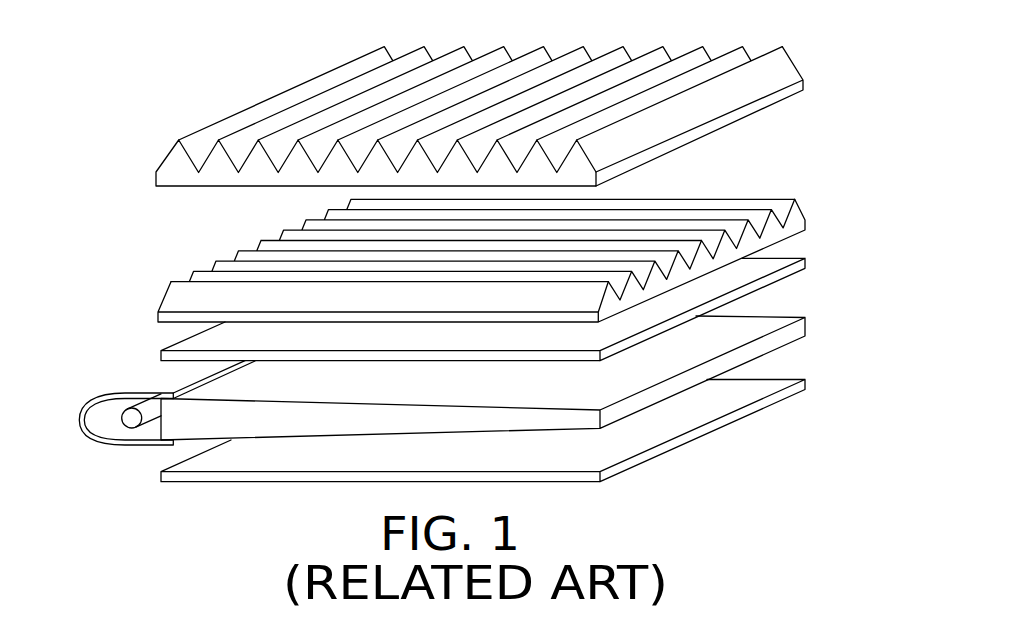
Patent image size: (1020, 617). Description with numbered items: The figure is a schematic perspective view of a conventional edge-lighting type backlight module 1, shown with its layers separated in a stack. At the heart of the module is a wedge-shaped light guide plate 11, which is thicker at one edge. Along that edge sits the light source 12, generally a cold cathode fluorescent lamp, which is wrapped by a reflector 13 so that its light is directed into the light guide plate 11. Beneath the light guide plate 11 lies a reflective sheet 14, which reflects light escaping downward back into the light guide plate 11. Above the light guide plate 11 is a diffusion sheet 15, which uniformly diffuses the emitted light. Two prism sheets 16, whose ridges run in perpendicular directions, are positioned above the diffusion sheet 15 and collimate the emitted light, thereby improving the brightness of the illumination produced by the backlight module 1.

The backlight module 1 is at (260, 37).
The light guide plate 11 is at (767, 342).
The light source 12 is at (132, 420).
The reflector 13 is at (95, 403).
The reflective sheet 14 is at (743, 390).
The diffusion sheet 15 is at (780, 274).
The prism sheets 16 is at (762, 102).